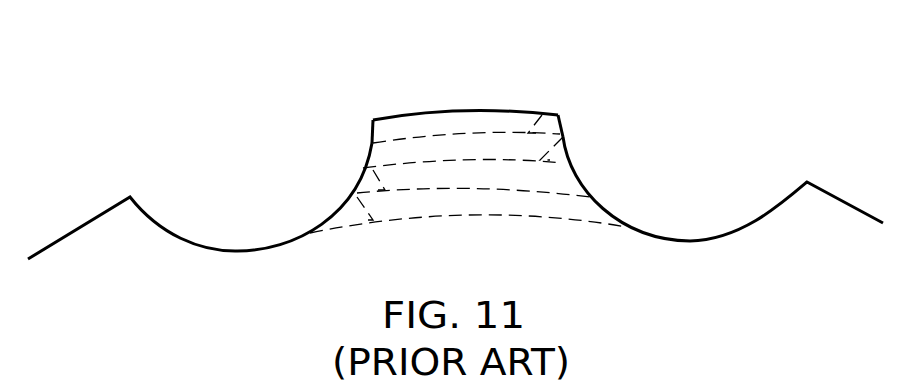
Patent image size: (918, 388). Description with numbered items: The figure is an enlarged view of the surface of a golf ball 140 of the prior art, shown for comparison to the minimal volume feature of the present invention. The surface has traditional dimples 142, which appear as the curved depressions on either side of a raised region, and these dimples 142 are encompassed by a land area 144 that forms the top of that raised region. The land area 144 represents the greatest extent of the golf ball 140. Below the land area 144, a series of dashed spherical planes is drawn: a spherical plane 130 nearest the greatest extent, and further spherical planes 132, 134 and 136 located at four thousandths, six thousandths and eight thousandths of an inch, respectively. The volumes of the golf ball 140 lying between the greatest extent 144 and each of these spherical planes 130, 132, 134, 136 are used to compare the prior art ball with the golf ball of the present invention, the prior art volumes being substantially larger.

The spherical plane 130 is at (542, 115).
The spherical plane 132 is at (563, 137).
The spherical plane 134 is at (373, 170).
The spherical plane 136 is at (358, 197).
The golf ball of the prior art 140 is at (403, 92).
The traditional dimples 142 is at (215, 175).
The land area 144 is at (457, 110).